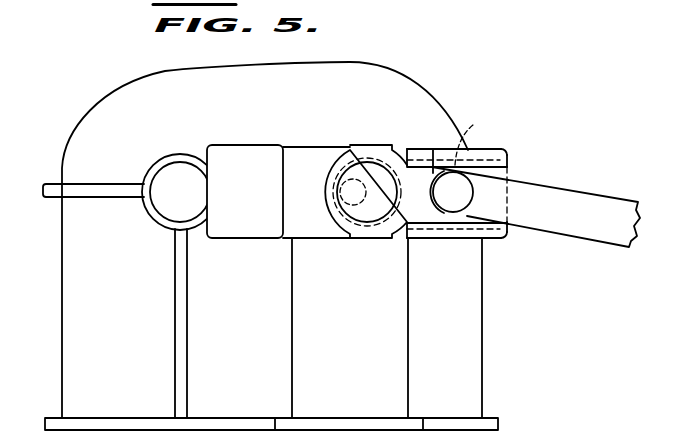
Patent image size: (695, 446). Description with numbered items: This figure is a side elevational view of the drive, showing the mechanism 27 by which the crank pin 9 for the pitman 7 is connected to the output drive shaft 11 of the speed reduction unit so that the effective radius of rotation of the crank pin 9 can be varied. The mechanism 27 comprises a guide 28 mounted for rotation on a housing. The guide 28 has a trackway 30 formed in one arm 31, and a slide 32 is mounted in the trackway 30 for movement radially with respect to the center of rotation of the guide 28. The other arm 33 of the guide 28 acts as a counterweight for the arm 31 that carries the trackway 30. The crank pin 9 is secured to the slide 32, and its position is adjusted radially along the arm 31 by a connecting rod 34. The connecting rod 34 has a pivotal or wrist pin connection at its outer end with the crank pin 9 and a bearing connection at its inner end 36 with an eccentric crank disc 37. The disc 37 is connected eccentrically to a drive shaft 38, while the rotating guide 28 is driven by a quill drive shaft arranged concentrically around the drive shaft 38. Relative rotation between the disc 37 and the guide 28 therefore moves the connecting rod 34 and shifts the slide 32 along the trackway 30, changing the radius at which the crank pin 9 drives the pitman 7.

The pitman 7 is at (577, 200).
The crank pin 9 is at (463, 192).
The output drive shaft 11 is at (167, 201).
The mechanism for varying the effective radius of rotation 27 is at (61, 238).
The guide 28 is at (302, 160).
The trackway 30 is at (477, 149).
The arm 31 is at (495, 153).
The slide 32 is at (440, 220).
The other arm 33 is at (252, 228).
The connecting rod 34 is at (425, 173).
The inner end 36 is at (358, 147).
The eccentric crank disc 37 is at (372, 174).
The drive shaft 38 is at (343, 210).